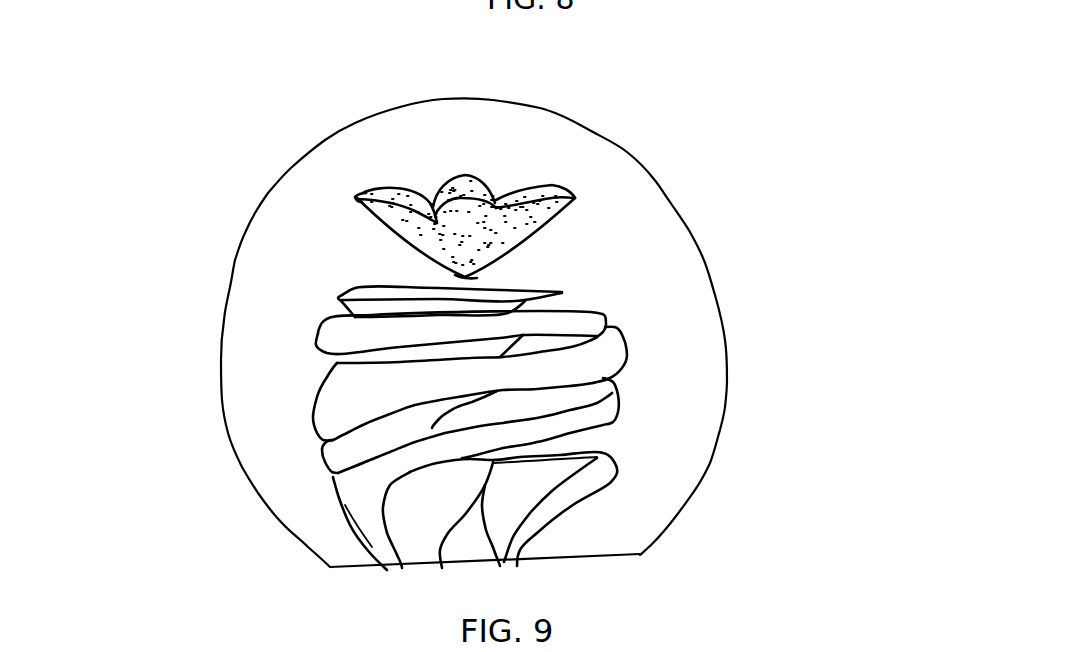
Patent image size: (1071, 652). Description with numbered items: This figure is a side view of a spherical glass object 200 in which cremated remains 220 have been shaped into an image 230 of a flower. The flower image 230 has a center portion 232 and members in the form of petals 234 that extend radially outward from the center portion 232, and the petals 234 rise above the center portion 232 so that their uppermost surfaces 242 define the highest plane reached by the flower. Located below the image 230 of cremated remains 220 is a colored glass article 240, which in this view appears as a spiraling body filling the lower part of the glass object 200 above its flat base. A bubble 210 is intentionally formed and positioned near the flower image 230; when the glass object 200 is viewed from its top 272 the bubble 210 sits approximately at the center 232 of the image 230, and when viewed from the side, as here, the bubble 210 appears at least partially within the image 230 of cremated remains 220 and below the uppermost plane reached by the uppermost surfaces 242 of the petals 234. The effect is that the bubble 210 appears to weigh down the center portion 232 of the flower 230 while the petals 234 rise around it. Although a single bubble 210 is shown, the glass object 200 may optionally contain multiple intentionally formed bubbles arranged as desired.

The glass object 200 is at (277, 48).
The bubble 210 is at (462, 176).
The cremated remains 220 is at (527, 233).
The image 230 is at (560, 190).
The center portion 232 is at (473, 277).
The petals 234 is at (355, 197).
The colored glass article 240 is at (602, 420).
The uppermost surfaces 242 is at (392, 185).
The top 272 is at (443, 97).